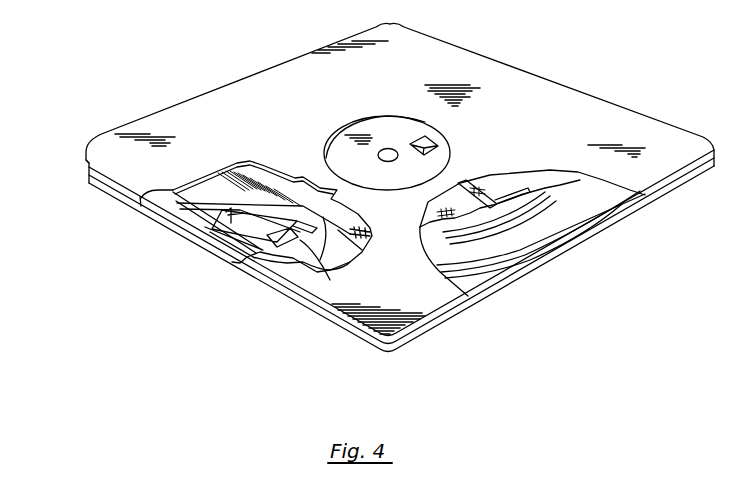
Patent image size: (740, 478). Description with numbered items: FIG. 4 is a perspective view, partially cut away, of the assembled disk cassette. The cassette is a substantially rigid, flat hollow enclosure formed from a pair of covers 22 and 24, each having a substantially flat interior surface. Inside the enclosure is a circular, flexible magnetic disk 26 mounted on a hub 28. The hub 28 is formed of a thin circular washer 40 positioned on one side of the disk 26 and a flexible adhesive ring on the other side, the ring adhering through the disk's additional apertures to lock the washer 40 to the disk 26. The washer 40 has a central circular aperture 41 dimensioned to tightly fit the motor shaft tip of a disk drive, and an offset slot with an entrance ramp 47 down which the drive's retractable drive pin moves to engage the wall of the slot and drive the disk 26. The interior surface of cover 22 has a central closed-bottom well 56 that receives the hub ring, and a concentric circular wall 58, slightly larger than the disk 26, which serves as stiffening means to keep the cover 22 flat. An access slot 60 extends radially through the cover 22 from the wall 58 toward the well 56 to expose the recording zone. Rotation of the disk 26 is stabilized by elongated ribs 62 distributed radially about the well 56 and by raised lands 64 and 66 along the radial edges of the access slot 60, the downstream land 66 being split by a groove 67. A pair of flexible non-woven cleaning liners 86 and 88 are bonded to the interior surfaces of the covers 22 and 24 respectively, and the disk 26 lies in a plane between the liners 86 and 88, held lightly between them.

The cover 22 is at (128, 214).
The cover 24 is at (80, 164).
The magnetic disk 26 is at (593, 210).
The hub 28 is at (373, 130).
The washer 40 is at (345, 146).
The central circular aperture 41 is at (390, 153).
The entrance ramp 47 is at (437, 143).
The well 56 is at (450, 160).
The circular wall 58 is at (172, 200).
The access slot 60 is at (247, 215).
The ribs 62 is at (490, 190).
The raised land 64 is at (216, 182).
The raised land 66 is at (360, 258).
The groove 67 is at (307, 230).
The cleaning liner 86 is at (203, 206).
The cleaning liner 88 is at (500, 268).